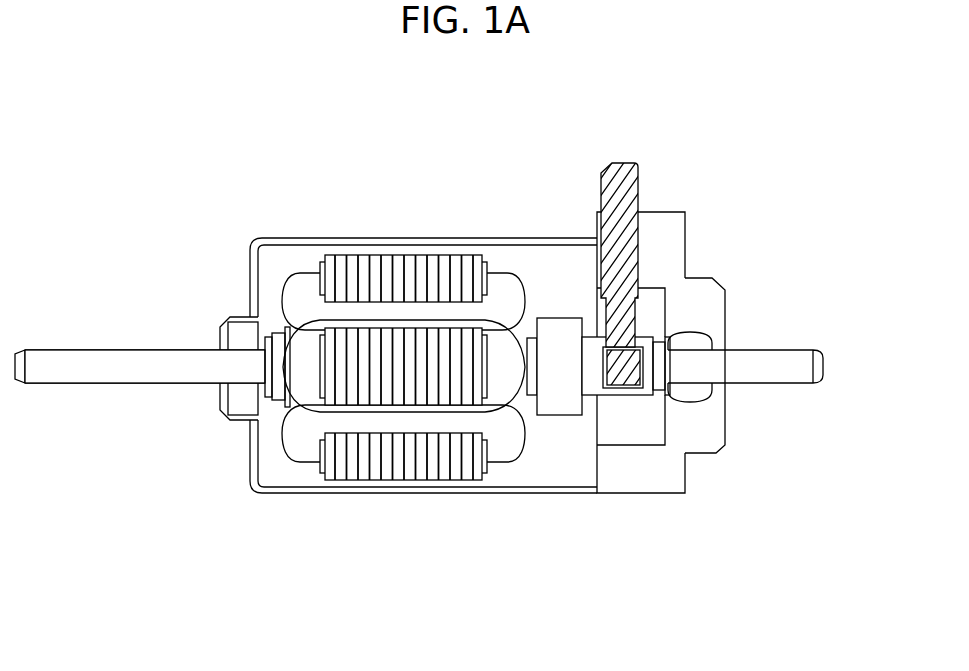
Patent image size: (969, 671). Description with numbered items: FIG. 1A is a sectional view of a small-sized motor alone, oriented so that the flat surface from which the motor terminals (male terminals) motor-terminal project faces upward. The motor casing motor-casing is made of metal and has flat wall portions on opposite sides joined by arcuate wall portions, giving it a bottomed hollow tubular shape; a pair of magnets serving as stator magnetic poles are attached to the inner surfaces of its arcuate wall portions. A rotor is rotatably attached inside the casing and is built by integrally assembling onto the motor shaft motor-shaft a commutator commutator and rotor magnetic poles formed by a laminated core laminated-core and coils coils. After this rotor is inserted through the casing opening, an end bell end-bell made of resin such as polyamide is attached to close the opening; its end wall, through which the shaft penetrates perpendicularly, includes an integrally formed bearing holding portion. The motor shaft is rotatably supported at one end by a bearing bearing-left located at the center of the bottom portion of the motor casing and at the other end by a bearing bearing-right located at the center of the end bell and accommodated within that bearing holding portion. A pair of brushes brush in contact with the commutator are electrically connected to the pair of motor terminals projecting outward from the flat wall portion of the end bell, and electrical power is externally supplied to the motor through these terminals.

The end bell end-bell is at (628, 483).
The motor casing motor-casing is at (311, 238).
The bearing bearing-left is at (240, 327).
The element coils is at (300, 443).
The laminated core laminated-core is at (402, 470).
The motor shaft motor-shaft is at (127, 377).
The element commutator is at (622, 377).
The element brush is at (627, 382).
The motor terminal (male terminal) motor-terminal is at (632, 165).
The bearing bearing-right is at (702, 340).